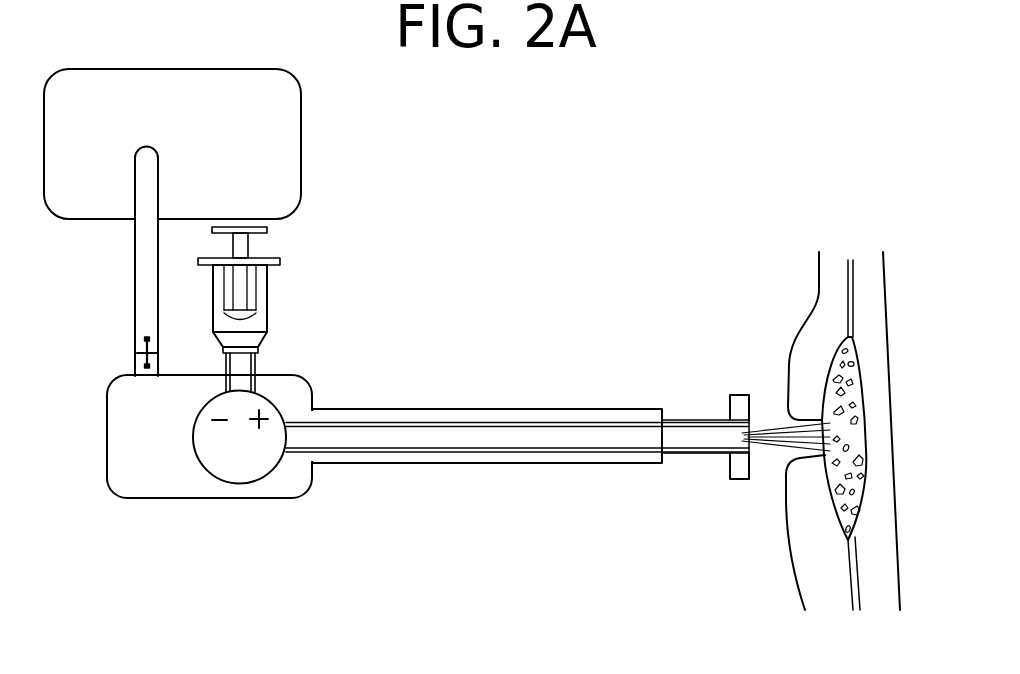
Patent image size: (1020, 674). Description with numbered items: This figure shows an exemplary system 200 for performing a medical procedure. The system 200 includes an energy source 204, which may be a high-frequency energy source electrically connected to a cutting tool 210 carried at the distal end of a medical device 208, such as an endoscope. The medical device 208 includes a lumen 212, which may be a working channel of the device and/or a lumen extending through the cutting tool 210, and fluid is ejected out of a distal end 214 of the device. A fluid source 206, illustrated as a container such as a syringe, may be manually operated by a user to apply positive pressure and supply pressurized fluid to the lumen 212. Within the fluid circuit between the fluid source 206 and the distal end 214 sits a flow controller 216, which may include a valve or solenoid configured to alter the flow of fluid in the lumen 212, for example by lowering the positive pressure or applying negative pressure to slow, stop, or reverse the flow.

The system 200 is at (707, 192).
The energy source 204 is at (301, 140).
The fluid source 206 is at (268, 296).
The medical device 208 is at (470, 409).
The cutting tool 210 is at (697, 421).
The lumen 212 is at (557, 437).
The distal end 214 is at (760, 413).
The flow controller 216 is at (272, 474).